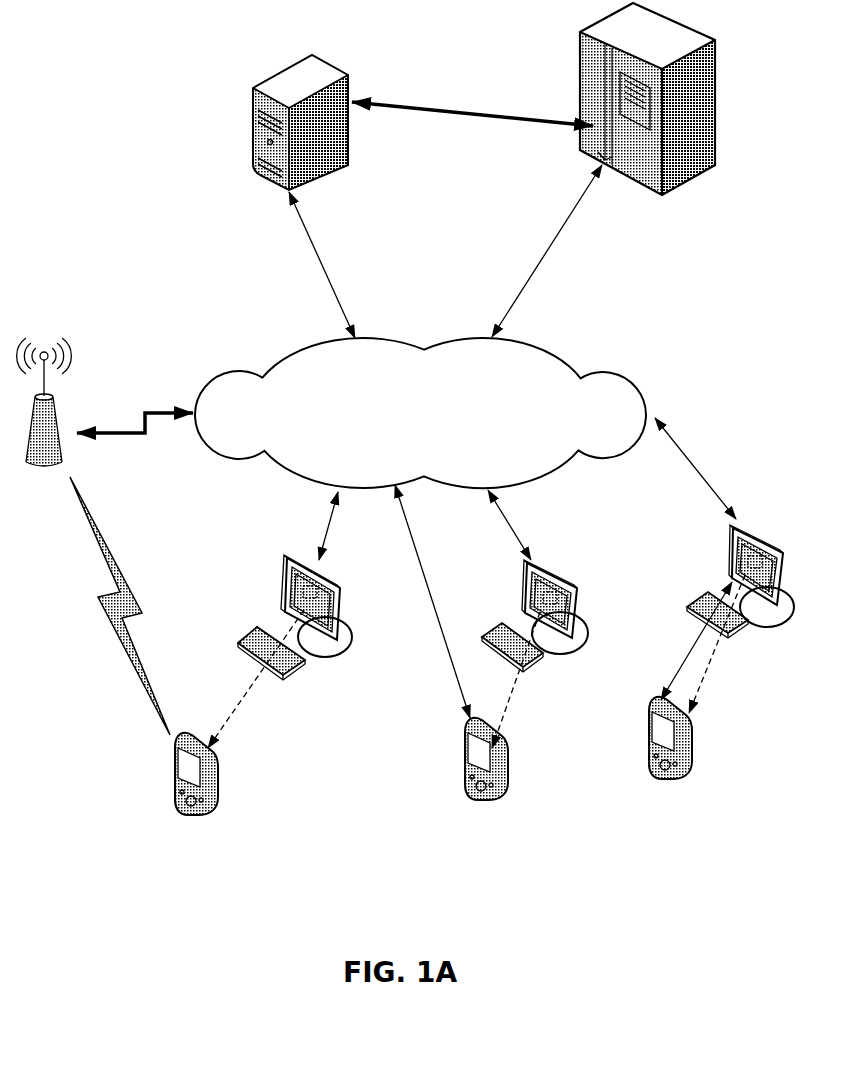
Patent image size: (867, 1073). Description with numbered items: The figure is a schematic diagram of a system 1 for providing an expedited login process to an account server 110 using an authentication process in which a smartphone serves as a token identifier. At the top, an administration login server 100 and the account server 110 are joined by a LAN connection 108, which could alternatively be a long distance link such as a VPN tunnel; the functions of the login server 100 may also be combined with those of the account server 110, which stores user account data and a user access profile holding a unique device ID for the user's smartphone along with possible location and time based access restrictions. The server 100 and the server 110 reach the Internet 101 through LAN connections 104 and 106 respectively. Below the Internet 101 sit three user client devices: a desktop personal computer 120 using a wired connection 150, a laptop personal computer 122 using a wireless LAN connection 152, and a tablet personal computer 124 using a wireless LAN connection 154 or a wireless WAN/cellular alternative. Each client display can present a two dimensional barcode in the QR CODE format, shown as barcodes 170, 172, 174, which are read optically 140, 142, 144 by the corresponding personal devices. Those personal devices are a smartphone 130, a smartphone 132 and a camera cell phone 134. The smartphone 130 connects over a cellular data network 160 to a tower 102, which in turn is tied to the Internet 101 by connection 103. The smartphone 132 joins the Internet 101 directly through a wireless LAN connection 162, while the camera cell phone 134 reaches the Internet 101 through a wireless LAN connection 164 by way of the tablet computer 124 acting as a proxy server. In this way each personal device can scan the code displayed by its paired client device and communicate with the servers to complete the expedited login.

The system 1 is at (80, 82).
The administration login server 100 is at (330, 168).
The Internet 101 is at (320, 463).
The tower 102 is at (55, 392).
The connection 103 is at (105, 440).
The LAN connection 104 is at (340, 298).
The LAN connection 106 is at (540, 270).
The LAN connection 108 is at (470, 110).
The account server 110 is at (718, 143).
The desktop personal computer 120 is at (327, 660).
The laptop personal computer 122 is at (560, 655).
The tablet personal computer 124 is at (763, 537).
The smartphone 130 is at (212, 822).
The smartphone 132 is at (508, 795).
The camera cell phone 134 is at (690, 768).
The optical scanning 140 is at (237, 723).
The optical scanning 142 is at (508, 717).
The optical scanning 144 is at (698, 695).
The wired connection 150 is at (330, 547).
The wireless LAN connection 152 is at (520, 537).
The wireless LAN connection 154 is at (688, 468).
The cellular data network 160 is at (110, 552).
The wireless LAN connection 162 is at (458, 690).
The wireless LAN connection 164 is at (675, 673).
The two dimensional barcode 170 is at (302, 598).
The two dimensional barcode 172 is at (538, 603).
The two dimensional barcode 174 is at (735, 563).